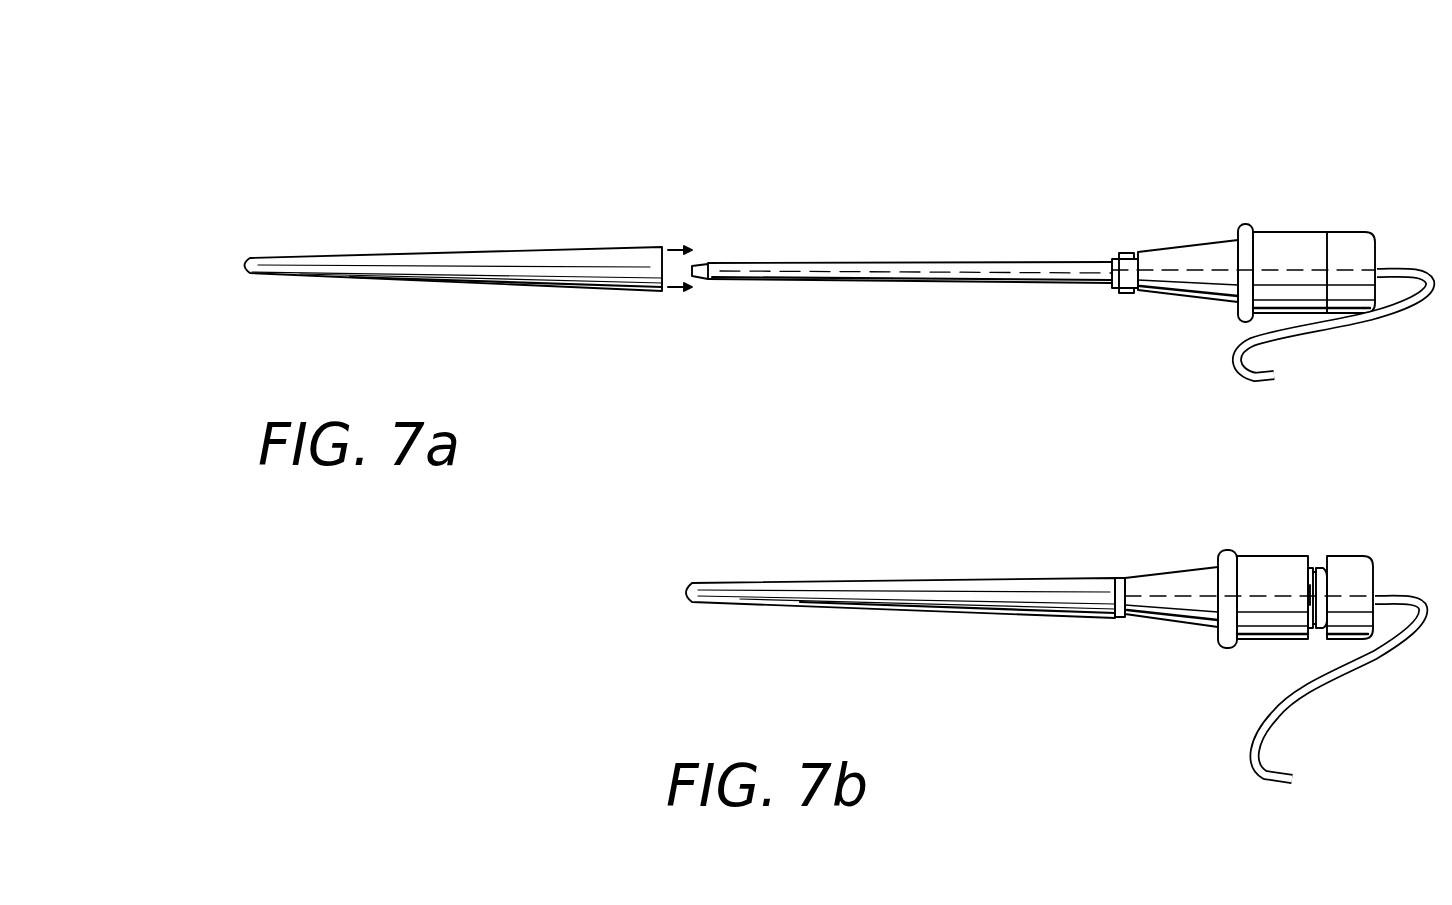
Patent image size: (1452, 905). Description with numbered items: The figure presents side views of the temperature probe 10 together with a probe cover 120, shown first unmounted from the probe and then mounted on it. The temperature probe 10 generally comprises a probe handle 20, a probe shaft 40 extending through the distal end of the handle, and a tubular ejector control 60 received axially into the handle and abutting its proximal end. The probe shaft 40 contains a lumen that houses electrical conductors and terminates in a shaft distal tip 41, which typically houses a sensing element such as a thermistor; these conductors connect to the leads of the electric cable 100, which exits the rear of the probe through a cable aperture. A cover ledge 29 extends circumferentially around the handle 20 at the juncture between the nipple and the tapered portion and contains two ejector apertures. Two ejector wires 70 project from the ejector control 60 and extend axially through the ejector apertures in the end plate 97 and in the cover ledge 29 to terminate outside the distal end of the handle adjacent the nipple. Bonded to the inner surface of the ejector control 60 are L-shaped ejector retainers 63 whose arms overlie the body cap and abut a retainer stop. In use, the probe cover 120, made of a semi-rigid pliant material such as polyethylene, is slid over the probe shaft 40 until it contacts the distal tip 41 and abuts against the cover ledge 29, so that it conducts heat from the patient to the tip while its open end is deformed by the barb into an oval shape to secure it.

In FIG. 7A, the temperature probe 10 is at (950, 162).
In FIG. 7A, the probe handle 20 is at (1290, 228).
In FIG. 7B, the probe handle 20 is at (1171, 597).
In FIG. 7A, the cover ledge 29 is at (1138, 250).
In FIG. 7B, the cover ledge 29 is at (1115, 578).
In FIG. 7A, the probe shaft 40 is at (932, 262).
In FIG. 7A, the shaft distal tip 41 is at (703, 262).
In FIG. 7A, the ejector control 60 is at (1355, 230).
In FIG. 7B, the ejector control 60 is at (1380, 557).
In FIG. 7B, the ejector retainer 63 is at (1322, 568).
In FIG. 7A, the ejector wire 70 is at (1123, 252).
In FIG. 7B, the end plate 97 is at (1313, 590).
In FIG. 7A, the electric cable 100 is at (1412, 268).
In FIG. 7B, the electric cable 100 is at (1422, 595).
In FIG. 7A, the probe cover 120 is at (494, 248).
In FIG. 7B, the probe cover 120 is at (852, 578).